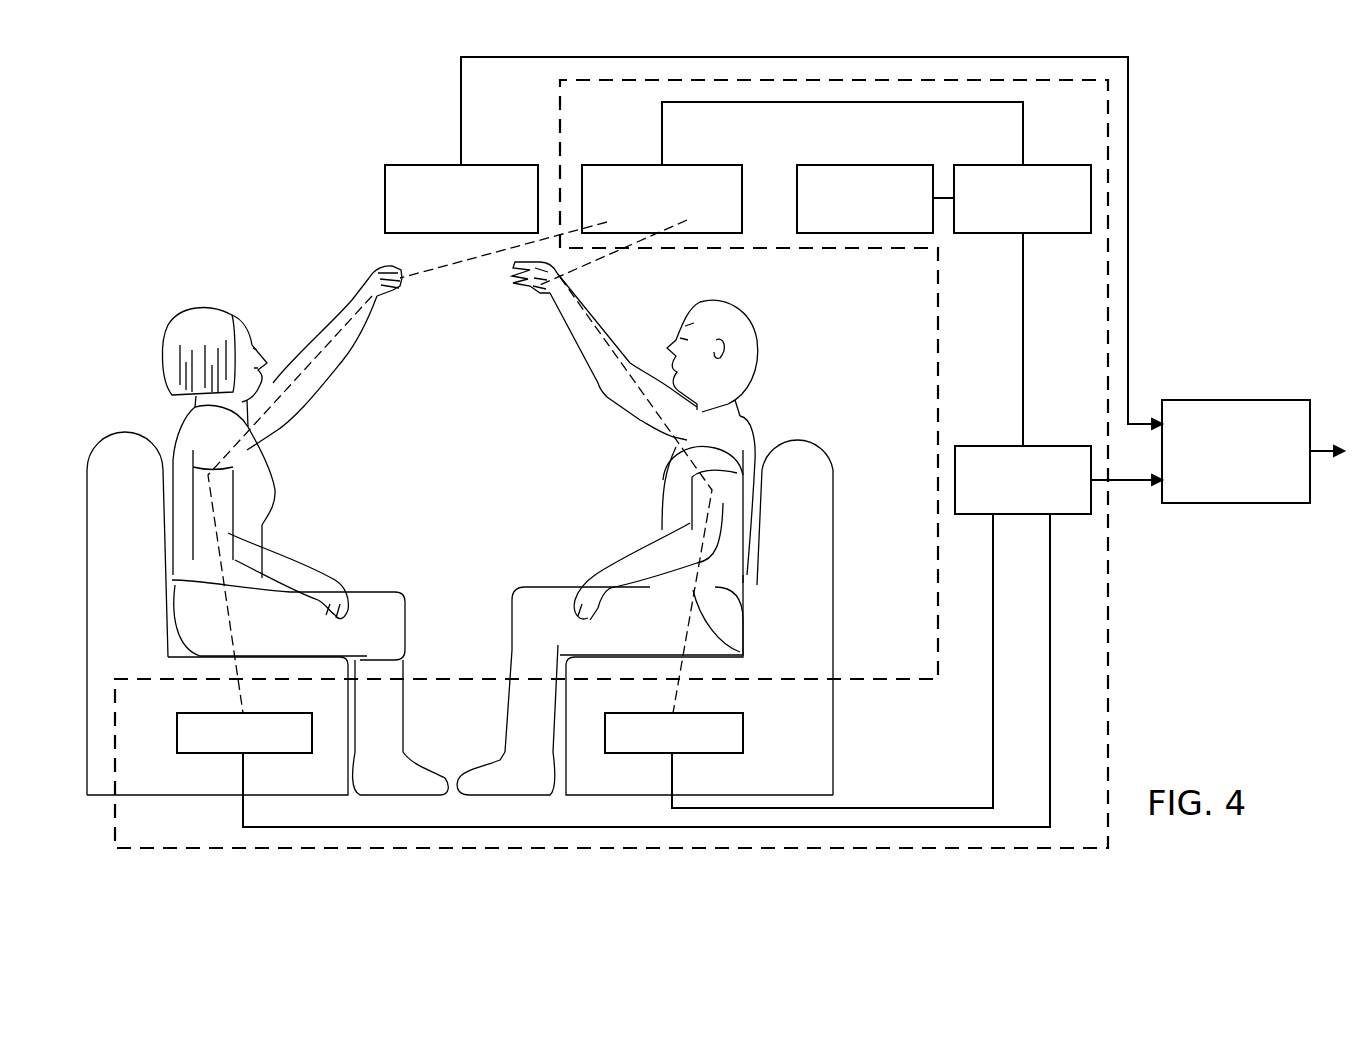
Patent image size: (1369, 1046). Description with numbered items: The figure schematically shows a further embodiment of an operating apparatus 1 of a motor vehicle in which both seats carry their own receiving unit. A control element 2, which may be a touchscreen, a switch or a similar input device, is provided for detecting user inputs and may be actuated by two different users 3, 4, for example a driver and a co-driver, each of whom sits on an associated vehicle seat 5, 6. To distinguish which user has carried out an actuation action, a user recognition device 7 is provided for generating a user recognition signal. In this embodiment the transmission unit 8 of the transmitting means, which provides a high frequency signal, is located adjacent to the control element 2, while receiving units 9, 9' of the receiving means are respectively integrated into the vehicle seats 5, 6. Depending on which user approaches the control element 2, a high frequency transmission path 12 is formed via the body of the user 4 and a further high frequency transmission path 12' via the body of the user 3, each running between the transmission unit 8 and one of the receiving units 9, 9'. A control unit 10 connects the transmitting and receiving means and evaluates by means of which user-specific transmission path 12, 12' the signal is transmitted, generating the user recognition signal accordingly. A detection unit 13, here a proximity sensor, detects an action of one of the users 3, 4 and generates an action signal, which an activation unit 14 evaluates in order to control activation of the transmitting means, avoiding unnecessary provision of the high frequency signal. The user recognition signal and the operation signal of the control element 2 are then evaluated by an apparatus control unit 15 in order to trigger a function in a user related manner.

The operating apparatus 1 is at (1193, 647).
The control element 2 is at (384, 200).
The user 3 is at (266, 527).
The user 4 is at (657, 515).
The vehicle seat 5 is at (121, 432).
The vehicle seat 6 is at (799, 432).
The user recognition device 7 is at (1108, 572).
The transmission unit 8 is at (742, 200).
The receiving unit 9 is at (697, 737).
The receiving unit 9' is at (220, 749).
The control unit 10 is at (1065, 446).
The high frequency transmission path 12 is at (626, 466).
The further high frequency transmission path 12' is at (407, 467).
The detection unit 13 is at (865, 165).
The activation unit 14 is at (1050, 165).
The apparatus control unit 15 is at (1235, 400).